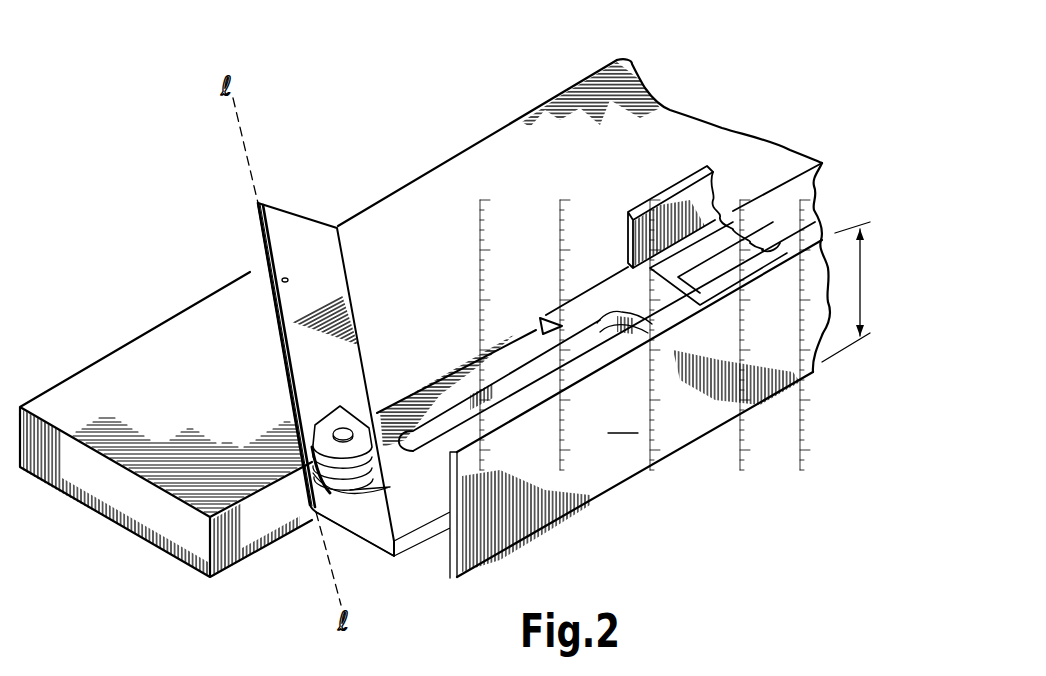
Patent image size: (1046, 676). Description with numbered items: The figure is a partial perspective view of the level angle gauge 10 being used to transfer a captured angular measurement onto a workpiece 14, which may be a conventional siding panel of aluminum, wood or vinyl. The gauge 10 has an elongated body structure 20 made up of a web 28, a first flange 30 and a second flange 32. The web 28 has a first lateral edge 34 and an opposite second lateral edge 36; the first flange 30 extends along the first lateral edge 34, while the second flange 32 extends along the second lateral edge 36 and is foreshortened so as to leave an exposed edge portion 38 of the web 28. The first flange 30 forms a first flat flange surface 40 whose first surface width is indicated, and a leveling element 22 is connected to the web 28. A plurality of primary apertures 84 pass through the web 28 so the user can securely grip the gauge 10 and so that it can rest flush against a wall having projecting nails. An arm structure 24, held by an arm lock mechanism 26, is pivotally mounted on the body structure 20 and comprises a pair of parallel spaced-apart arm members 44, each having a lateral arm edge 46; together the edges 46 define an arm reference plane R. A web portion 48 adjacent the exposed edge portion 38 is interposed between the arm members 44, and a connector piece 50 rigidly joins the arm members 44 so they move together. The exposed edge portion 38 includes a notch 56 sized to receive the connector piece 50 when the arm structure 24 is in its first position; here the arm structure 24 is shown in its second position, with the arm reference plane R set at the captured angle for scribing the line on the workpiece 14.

The level angle gauge 10 is at (703, 438).
The workpiece 14 is at (167, 343).
The elongated body structure 20 is at (712, 398).
The leveling element 22 is at (753, 247).
The arm structure 24 is at (284, 236).
The arm lock mechanism 26 is at (347, 409).
The web 28 is at (407, 523).
The first flange 30 is at (560, 520).
The second flange 32 is at (707, 192).
The first lateral edge 34 is at (443, 510).
The second lateral edge 36 is at (600, 350).
The exposed edge portion 38 is at (497, 337).
The first flat flange surface 40 is at (623, 420).
The arm members 44 is at (280, 318).
The lateral arm edge 46 is at (278, 376).
The web portion 48 is at (513, 347).
The connector piece 50 is at (270, 287).
The notch 56 is at (540, 337).
The primary apertures 84 is at (597, 337).
The arm reference plane R is at (258, 200).